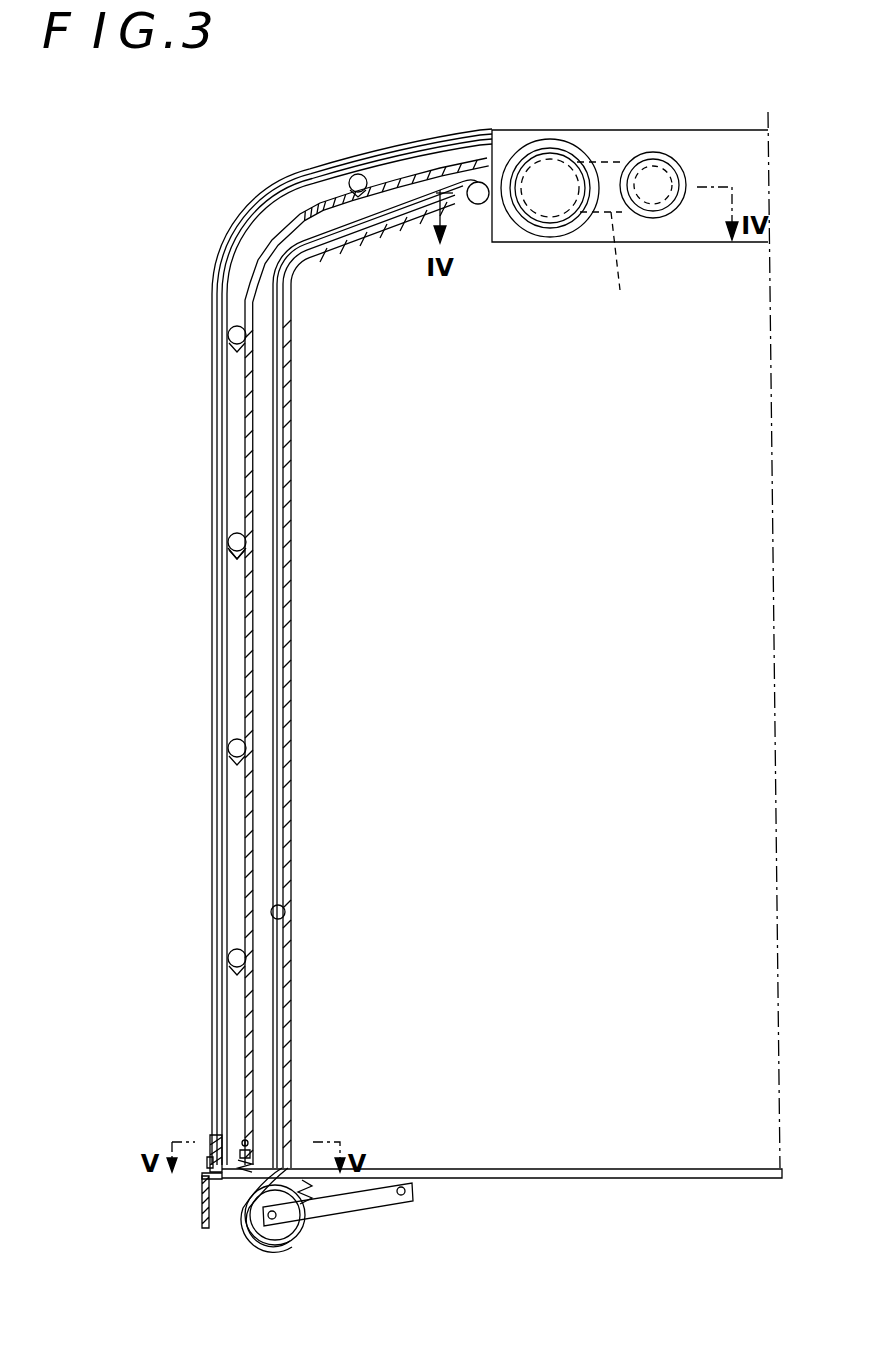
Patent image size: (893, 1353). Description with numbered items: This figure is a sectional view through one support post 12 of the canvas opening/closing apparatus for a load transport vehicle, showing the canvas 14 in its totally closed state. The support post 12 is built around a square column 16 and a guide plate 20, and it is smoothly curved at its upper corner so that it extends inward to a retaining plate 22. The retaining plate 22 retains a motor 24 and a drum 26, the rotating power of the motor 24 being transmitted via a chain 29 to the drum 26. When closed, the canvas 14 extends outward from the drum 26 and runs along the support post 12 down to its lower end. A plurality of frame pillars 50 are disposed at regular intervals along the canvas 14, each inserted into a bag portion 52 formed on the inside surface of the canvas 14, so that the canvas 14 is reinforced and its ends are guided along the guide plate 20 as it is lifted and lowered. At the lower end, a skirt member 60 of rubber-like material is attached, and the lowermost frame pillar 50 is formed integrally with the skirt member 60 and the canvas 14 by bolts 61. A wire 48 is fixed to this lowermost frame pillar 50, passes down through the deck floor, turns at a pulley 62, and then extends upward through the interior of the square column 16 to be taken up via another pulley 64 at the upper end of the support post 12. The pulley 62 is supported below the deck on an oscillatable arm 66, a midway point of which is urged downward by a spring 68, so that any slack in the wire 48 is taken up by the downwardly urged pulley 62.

The support post 12 is at (296, 567).
The canvas 14 is at (482, 129).
The square column 16 is at (294, 634).
The guide plate 20 is at (222, 661).
The retaining plate 22 is at (652, 132).
The motor 24 is at (662, 213).
The drum 26 is at (580, 227).
The chain 29 is at (606, 241).
The wire 48 is at (286, 913).
The frame pillar 50 is at (228, 540).
The bag portion 52 is at (230, 559).
The skirt member 60 is at (204, 1201).
The bolt 61 is at (206, 1161).
The pulley 62 is at (261, 1241).
The pulley 64 is at (479, 206).
The arm 66 is at (373, 1201).
The spring 68 is at (346, 1183).